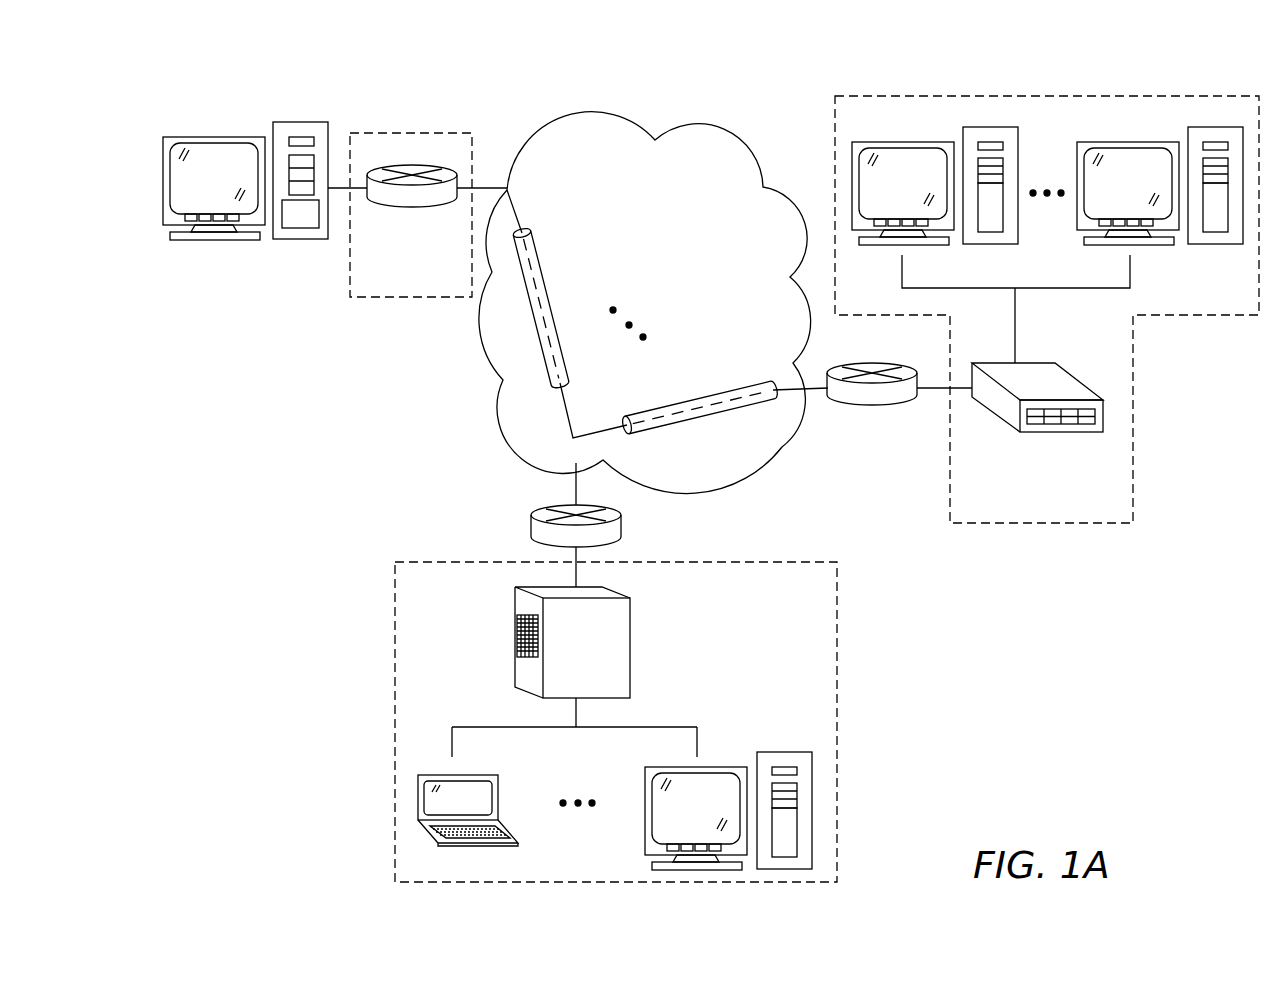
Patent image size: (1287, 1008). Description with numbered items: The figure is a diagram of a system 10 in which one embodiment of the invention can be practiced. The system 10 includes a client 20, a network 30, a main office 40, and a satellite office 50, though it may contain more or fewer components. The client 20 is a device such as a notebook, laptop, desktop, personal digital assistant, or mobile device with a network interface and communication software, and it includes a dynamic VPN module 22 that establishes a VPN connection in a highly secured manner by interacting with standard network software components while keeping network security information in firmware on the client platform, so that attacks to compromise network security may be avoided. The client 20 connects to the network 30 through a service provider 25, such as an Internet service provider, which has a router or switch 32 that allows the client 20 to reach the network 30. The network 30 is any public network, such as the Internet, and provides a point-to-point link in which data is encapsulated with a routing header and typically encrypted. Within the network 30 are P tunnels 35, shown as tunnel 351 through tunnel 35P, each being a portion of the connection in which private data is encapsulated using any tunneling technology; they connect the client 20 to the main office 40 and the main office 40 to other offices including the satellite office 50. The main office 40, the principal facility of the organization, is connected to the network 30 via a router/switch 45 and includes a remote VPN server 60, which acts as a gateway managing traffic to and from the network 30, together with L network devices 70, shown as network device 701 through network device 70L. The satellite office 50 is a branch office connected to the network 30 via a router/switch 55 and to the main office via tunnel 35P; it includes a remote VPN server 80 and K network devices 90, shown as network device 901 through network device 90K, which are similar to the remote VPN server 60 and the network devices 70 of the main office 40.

The system 10 is at (1196, 78).
The client 20 is at (249, 220).
The dynamic VPN module 22 is at (301, 214).
The service provider 25 is at (462, 133).
The network 30 is at (653, 303).
The router or switch 32 is at (412, 207).
The tunnels 35 is at (667, 314).
The tunnel 1 351 is at (580, 314).
The tunnel P 35P is at (724, 390).
The main office 40 is at (837, 645).
The router/switch 45 is at (617, 530).
The satellite office 50 is at (1126, 523).
The router/switch 55 is at (868, 405).
The remote VPN server 60 is at (625, 612).
The network devices 70 is at (617, 791).
The network device 1 701 is at (496, 778).
The network device L 70L is at (799, 760).
The remote VPN server 80 is at (1027, 432).
The network devices 90 is at (1047, 173).
The network device 1 901 is at (938, 145).
The network device K 90K is at (1161, 145).